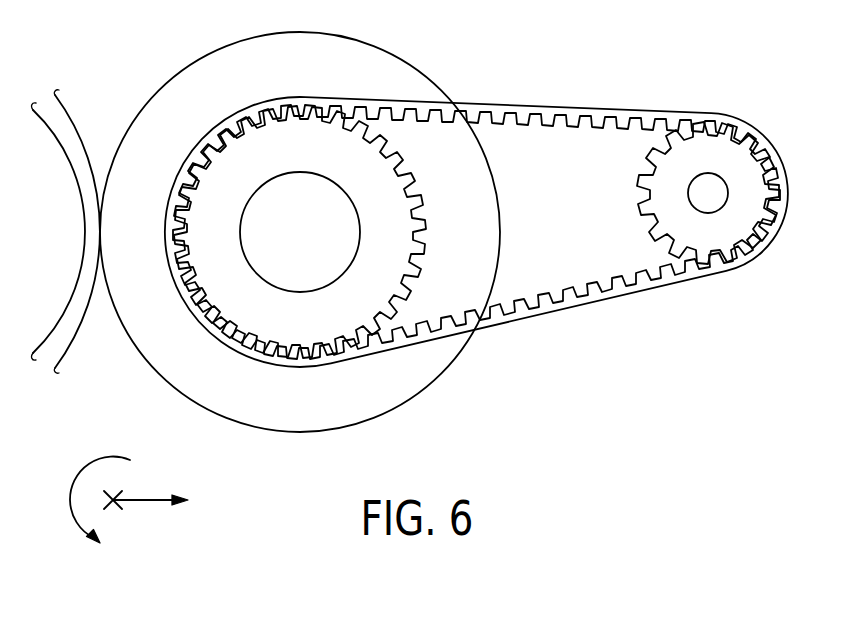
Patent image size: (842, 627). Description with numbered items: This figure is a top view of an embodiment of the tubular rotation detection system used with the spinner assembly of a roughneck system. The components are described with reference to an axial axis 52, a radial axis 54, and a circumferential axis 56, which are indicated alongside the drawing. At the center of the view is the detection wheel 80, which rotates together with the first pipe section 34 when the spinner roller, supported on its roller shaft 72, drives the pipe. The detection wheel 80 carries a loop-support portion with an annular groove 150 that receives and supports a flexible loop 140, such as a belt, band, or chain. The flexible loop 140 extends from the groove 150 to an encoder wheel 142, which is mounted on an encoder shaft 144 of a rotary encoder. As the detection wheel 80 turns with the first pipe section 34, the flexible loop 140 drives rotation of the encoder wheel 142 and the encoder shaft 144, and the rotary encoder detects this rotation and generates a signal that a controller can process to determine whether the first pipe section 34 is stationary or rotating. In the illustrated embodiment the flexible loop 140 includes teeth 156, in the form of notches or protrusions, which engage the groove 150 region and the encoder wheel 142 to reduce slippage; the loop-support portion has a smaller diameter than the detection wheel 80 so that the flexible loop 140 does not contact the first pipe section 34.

The first pipe section 34 is at (75, 157).
The axial axis 52 is at (110, 508).
The radial axis 54 is at (143, 498).
The circumferential axis 56 is at (75, 478).
The roller shaft 72 is at (272, 198).
The detection wheel 80 is at (347, 50).
The flexible loop 140 is at (512, 108).
The encoder wheel 142 is at (690, 153).
The encoder shaft 144 is at (708, 195).
The groove 150 is at (217, 187).
The teeth 156 is at (552, 123).